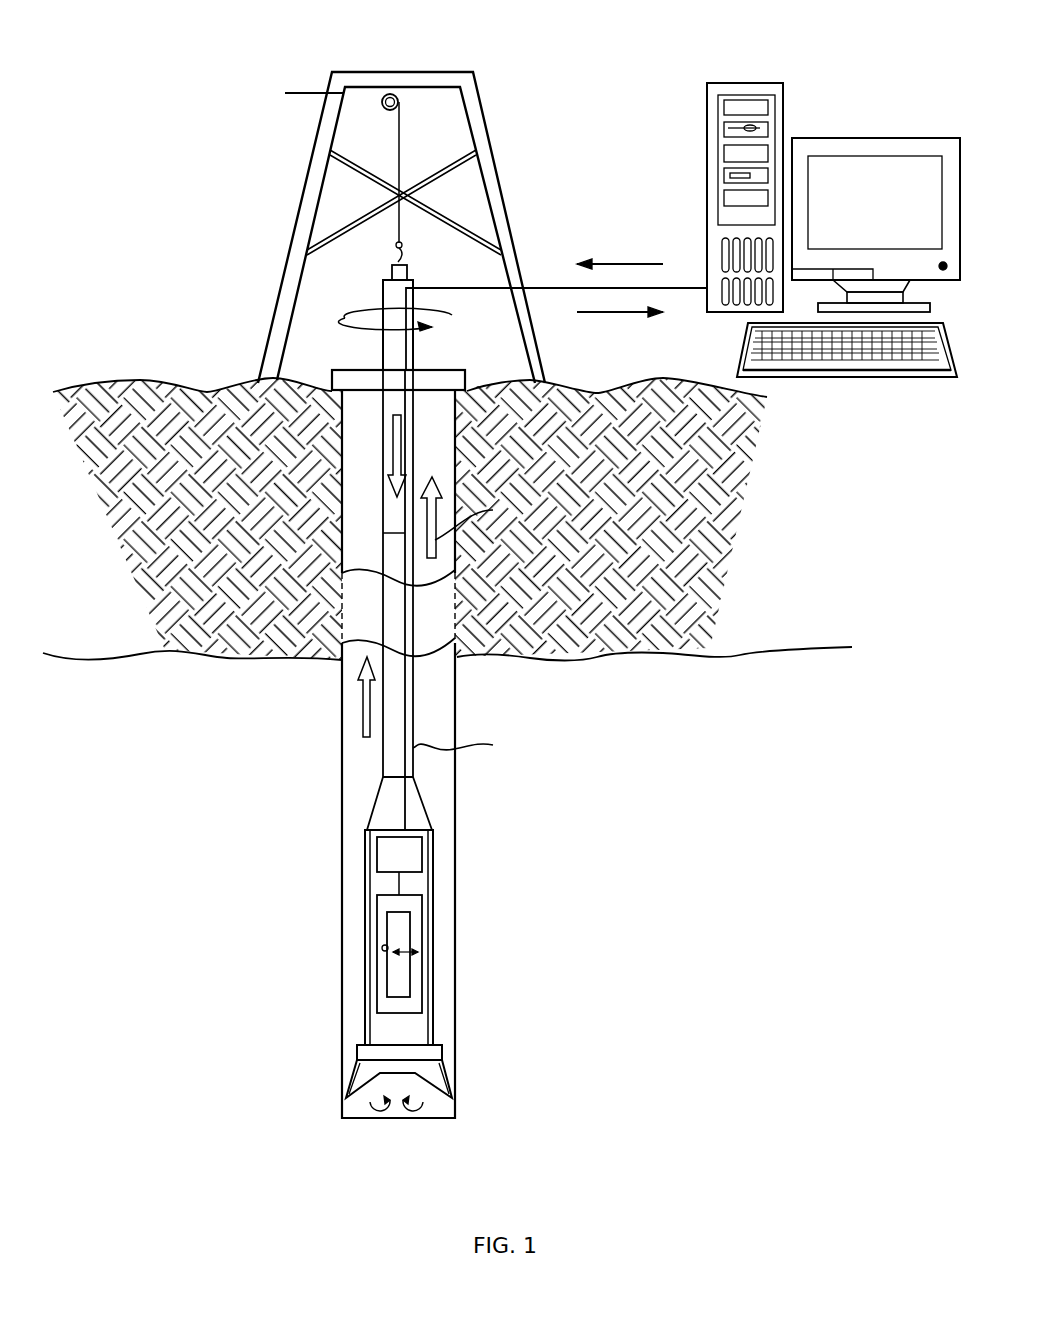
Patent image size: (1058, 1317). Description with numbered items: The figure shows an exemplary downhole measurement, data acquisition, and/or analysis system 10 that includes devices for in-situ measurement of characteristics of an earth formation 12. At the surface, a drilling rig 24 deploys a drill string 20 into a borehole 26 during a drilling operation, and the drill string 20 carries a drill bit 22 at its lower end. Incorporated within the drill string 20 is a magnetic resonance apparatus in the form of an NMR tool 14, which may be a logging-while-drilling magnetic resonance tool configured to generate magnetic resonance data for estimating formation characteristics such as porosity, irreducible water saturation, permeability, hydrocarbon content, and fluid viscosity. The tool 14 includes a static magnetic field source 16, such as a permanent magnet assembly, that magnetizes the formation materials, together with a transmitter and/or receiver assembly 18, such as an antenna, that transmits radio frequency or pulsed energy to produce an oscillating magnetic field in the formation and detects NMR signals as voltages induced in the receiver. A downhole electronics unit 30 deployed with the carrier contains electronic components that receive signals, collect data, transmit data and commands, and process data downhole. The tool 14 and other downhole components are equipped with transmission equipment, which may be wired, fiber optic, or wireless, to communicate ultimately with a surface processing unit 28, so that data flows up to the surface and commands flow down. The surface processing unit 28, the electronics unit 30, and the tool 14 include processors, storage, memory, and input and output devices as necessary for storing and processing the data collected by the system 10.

The downhole measurement, data acquisition, and/or analysis system 10 is at (156, 292).
The earth formation 12 is at (652, 788).
The NMR tool 14 is at (378, 905).
The static magnetic field source 16 is at (405, 925).
The transmitter and/or receiver assembly 18 is at (385, 950).
The drill string 20 is at (383, 764).
The drill bit 22 is at (360, 1068).
The drilling rig 24 is at (305, 213).
The borehole 26 is at (352, 543).
The surface processing unit 28 is at (748, 83).
The downhole electronics unit 30 is at (377, 855).